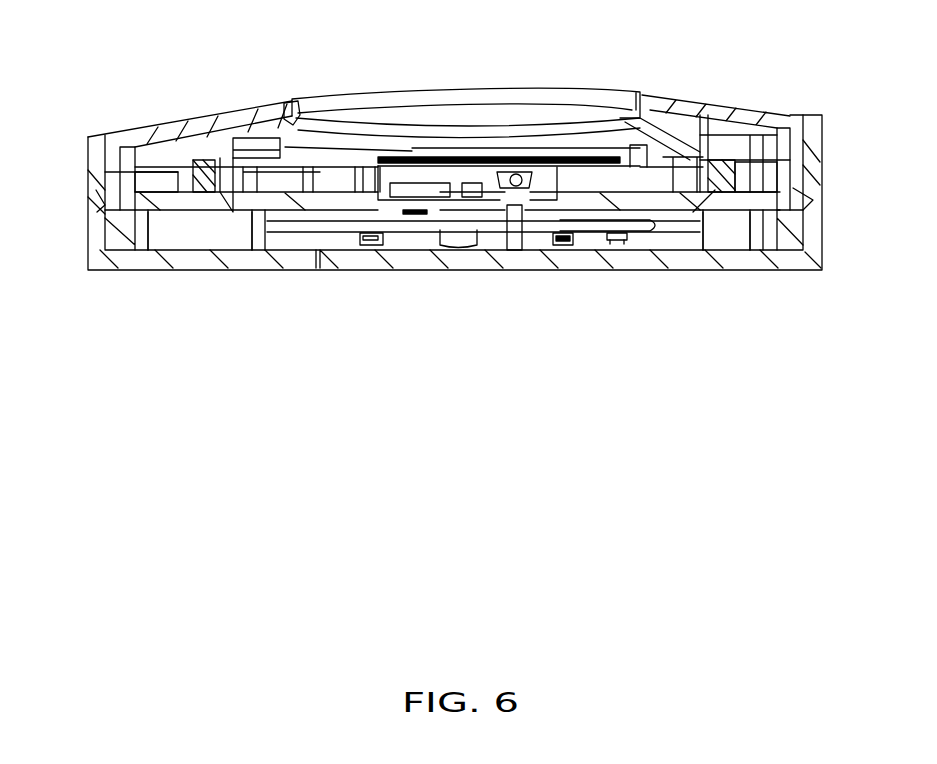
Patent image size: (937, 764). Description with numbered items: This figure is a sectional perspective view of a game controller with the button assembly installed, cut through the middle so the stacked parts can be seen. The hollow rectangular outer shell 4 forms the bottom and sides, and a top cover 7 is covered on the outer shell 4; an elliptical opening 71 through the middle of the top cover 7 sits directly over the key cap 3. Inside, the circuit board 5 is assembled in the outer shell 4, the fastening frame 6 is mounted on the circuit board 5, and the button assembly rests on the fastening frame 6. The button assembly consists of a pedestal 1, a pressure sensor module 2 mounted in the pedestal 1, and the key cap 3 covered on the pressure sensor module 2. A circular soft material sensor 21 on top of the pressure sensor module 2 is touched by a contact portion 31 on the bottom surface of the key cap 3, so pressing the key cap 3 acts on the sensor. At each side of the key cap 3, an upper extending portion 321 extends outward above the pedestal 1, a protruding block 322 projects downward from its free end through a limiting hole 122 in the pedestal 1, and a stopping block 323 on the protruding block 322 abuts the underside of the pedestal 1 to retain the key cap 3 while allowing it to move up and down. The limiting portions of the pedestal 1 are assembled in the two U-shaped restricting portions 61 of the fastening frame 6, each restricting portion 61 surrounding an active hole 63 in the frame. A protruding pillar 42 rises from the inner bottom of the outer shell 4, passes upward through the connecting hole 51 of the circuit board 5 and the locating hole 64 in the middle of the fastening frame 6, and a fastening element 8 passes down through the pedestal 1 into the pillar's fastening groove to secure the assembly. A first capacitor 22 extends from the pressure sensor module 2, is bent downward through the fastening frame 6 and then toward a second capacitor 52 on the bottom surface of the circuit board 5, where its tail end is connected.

The pedestal 1 is at (350, 173).
The pressure sensor module 2 is at (410, 147).
The soft material sensor 21 is at (453, 168).
The key cap 3 is at (315, 112).
The contact portion 31 is at (510, 147).
The outer shell 4 is at (162, 257).
The protruding pillar 42 is at (515, 237).
The circuit board 5 is at (337, 231).
The connecting hole 51 is at (499, 213).
The second capacitor 52 is at (594, 242).
The fastening frame 6 is at (105, 227).
The restricting portion 61 is at (105, 175).
The active hole 63 is at (202, 214).
The locating hole 64 is at (500, 211).
The top cover 7 is at (123, 138).
The opening 71 is at (288, 112).
The fastening element 8 is at (522, 186).
The first capacitor 22 is at (630, 232).
The limiting hole 122 is at (217, 172).
The upper extending portion 321 is at (248, 148).
The protruding block 322 is at (223, 172).
The stopping block 323 is at (198, 175).